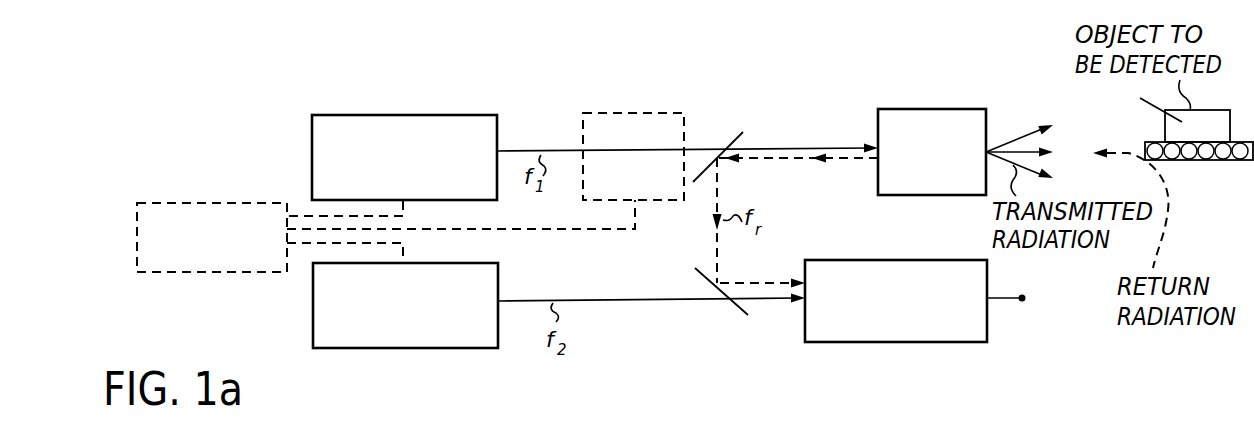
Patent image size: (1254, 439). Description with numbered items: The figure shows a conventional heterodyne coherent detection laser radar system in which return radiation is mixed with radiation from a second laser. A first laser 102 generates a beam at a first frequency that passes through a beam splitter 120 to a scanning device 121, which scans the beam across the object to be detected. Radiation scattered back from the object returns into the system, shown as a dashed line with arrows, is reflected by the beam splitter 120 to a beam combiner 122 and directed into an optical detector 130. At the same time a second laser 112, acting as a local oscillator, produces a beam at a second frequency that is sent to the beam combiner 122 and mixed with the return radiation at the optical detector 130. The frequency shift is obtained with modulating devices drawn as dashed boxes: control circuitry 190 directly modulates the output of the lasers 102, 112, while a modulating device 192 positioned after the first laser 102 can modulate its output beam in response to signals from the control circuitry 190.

The first laser 102 is at (476, 126).
The second laser 112 is at (395, 335).
The beam splitter 120 is at (737, 140).
The scanning device 121 is at (932, 152).
The beam combiner 122 is at (730, 312).
The optical detector 130 is at (920, 342).
The control circuitry 190 is at (218, 272).
The modulating device 192 is at (663, 113).